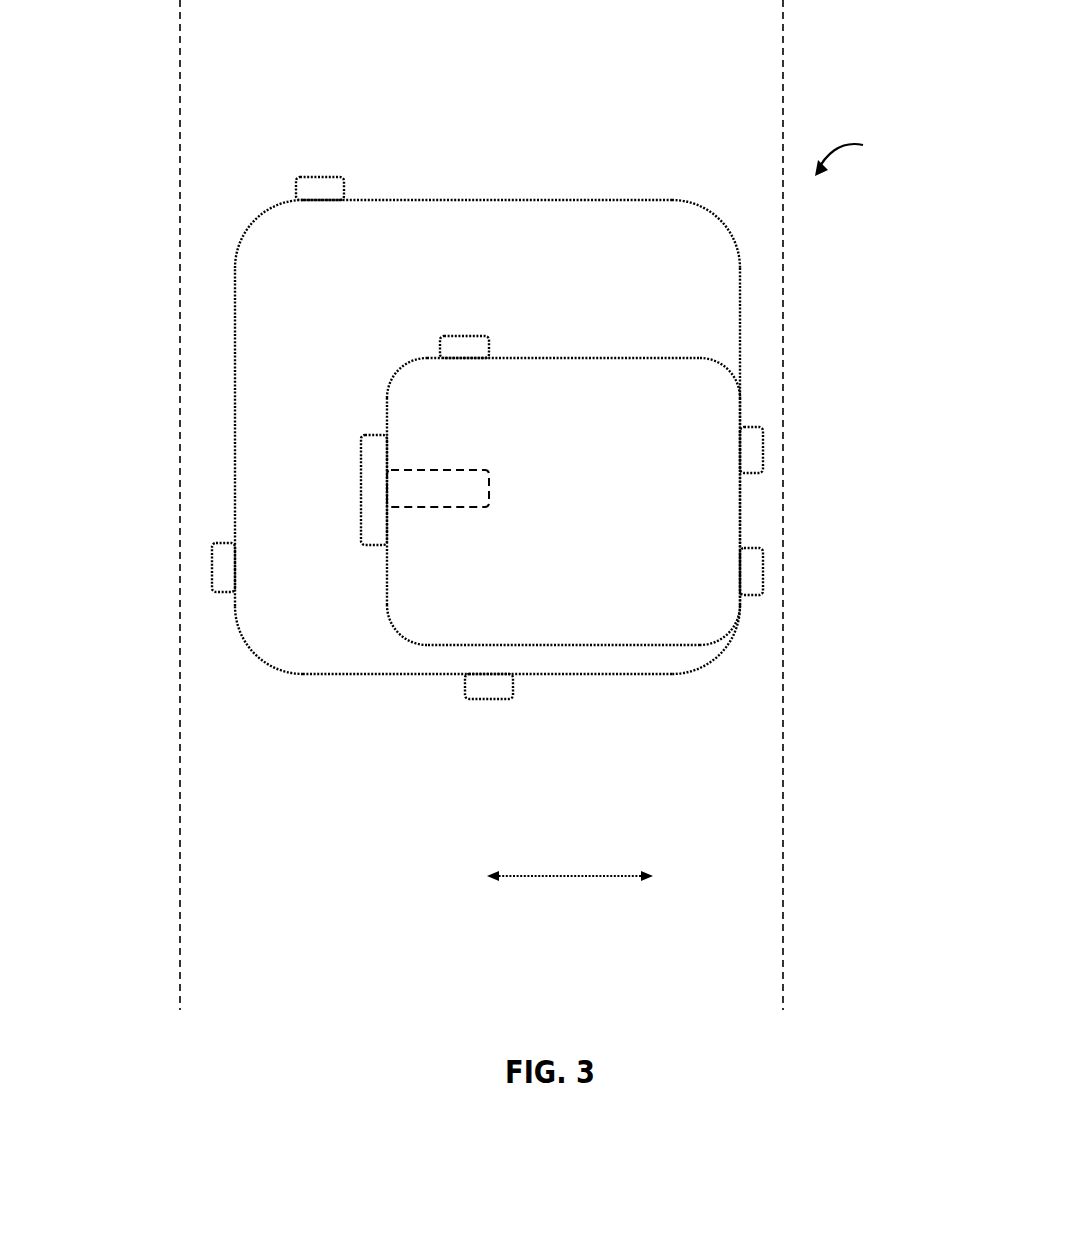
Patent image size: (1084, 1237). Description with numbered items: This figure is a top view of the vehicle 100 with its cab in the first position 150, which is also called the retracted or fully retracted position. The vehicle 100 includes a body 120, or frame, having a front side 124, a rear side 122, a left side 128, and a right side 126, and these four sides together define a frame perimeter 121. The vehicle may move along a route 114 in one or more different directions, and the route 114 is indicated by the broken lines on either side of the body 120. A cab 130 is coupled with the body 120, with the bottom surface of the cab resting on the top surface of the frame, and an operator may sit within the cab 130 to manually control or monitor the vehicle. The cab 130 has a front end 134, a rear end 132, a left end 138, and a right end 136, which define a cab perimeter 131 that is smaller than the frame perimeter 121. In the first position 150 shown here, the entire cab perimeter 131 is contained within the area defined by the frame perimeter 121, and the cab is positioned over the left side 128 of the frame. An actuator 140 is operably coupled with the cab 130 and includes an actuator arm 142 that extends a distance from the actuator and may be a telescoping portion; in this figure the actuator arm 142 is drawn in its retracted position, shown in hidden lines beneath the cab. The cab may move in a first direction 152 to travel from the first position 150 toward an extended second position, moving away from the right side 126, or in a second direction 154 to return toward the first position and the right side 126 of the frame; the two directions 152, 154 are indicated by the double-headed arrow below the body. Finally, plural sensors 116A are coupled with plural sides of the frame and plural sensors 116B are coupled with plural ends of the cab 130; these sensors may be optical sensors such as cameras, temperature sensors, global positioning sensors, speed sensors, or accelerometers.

The vehicle 100 is at (918, 80).
The route 114 is at (180, 83).
The sensors coupled with the frame 116A is at (318, 177).
The sensors coupled with the cab 116B is at (465, 336).
The body 120 is at (330, 263).
The frame perimeter 121 is at (693, 210).
The rear side 122 is at (499, 200).
The front side 124 is at (352, 674).
The right side 126 is at (235, 348).
The left side 128 is at (740, 310).
The cab 130 is at (475, 412).
The cab perimeter 131 is at (678, 358).
The rear end 132 is at (582, 358).
The front end 134 is at (617, 644).
The right end 136 is at (388, 612).
The left end 138 is at (740, 512).
The actuator 140 is at (373, 435).
The actuator arm 142 is at (467, 507).
The first position 150 is at (866, 150).
The first direction 152 is at (602, 877).
The second direction 154 is at (464, 877).